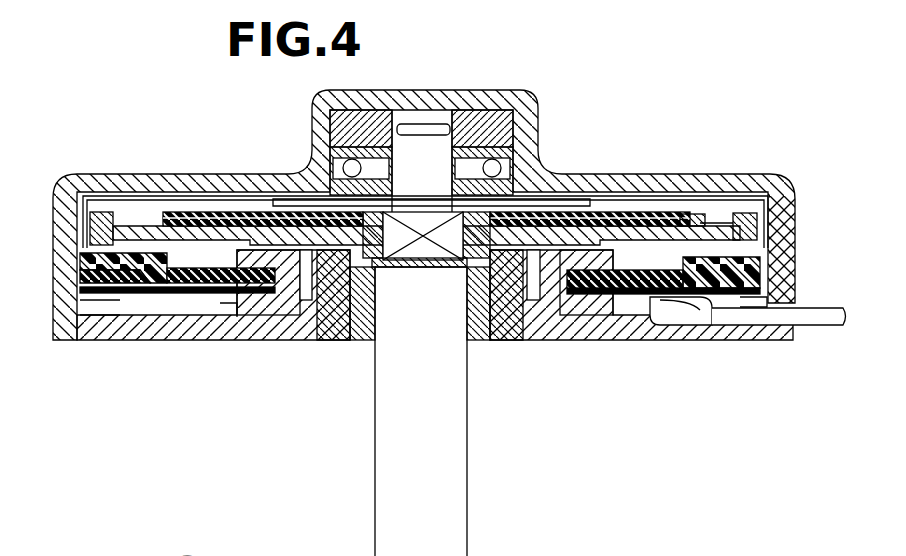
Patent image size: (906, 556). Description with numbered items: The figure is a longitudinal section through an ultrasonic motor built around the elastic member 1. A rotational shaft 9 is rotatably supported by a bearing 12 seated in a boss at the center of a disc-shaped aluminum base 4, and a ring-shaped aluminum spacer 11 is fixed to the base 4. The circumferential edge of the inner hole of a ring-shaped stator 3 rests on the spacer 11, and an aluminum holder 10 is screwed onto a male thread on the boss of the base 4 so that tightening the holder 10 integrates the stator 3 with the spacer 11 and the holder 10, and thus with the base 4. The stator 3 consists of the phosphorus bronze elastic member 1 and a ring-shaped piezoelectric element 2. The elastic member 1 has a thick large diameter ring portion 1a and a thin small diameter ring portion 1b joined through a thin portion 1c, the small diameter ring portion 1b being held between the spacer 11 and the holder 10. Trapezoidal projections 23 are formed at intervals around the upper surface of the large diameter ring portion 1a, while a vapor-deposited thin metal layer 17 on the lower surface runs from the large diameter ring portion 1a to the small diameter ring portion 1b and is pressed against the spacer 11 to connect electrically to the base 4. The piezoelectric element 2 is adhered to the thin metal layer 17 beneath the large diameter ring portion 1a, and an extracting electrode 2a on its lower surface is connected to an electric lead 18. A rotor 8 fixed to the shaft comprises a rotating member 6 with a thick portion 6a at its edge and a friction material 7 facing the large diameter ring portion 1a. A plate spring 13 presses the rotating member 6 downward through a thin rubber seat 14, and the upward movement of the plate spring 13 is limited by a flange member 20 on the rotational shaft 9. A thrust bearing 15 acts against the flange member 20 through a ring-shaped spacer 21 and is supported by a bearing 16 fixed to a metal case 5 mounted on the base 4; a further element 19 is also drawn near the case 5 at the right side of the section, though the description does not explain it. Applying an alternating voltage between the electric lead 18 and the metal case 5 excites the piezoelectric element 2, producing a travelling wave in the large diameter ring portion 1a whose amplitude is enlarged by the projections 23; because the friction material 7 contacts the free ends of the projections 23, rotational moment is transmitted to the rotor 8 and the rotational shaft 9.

The elastic member 1 is at (90, 268).
The large diameter ring portion 1a is at (98, 268).
The small diameter ring portion 1b is at (271, 320).
The thin portion 1c is at (220, 307).
The piezoelectric element 2 is at (133, 290).
The extracting electrode 2a is at (641, 294).
The stator 3 is at (197, 300).
The base 4 is at (253, 343).
The metal case 5 is at (203, 178).
The rotating member 6 is at (755, 218).
The thick portion 6a is at (104, 212).
The friction material 7 is at (745, 243).
The rotor 8 is at (722, 222).
The rotational shaft 9 is at (380, 512).
The holder 10 is at (583, 300).
The spacer 11 is at (598, 312).
The bearing 12 is at (480, 330).
The plate spring 13 is at (651, 212).
The rubber seat 14 is at (694, 223).
The thrust bearing 15 is at (513, 166).
The bearing 16 is at (495, 115).
The thin metal layer 17 is at (143, 293).
The electric lead 18 is at (684, 310).
The lug 19 is at (768, 297).
The flange member 20 is at (560, 192).
The spacer 21 is at (403, 182).
The trapezoidal projections 23 is at (84, 196).